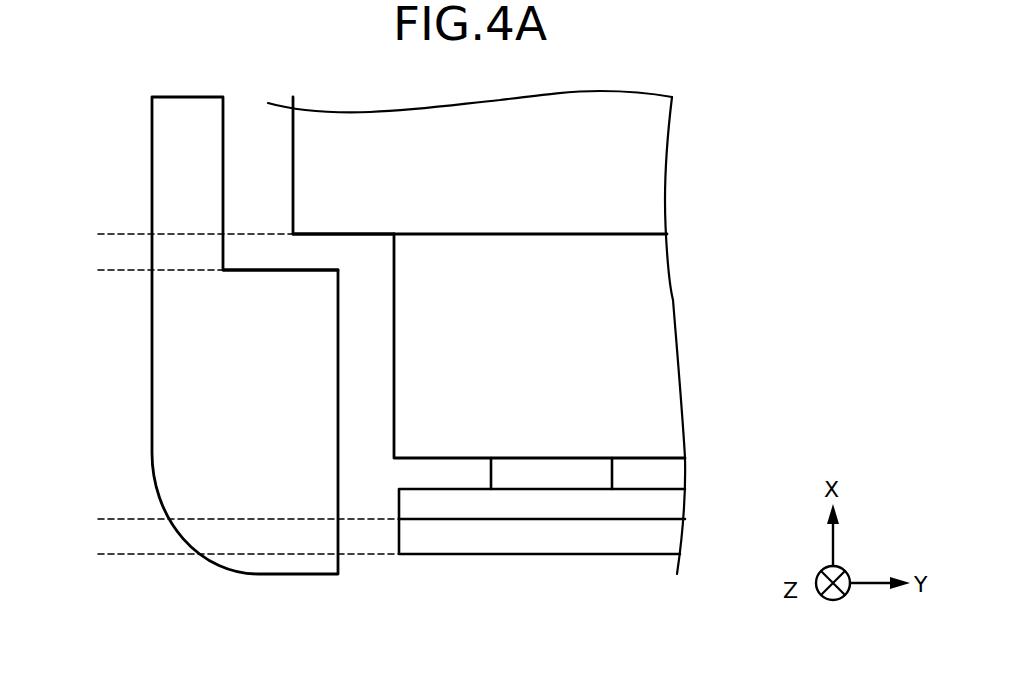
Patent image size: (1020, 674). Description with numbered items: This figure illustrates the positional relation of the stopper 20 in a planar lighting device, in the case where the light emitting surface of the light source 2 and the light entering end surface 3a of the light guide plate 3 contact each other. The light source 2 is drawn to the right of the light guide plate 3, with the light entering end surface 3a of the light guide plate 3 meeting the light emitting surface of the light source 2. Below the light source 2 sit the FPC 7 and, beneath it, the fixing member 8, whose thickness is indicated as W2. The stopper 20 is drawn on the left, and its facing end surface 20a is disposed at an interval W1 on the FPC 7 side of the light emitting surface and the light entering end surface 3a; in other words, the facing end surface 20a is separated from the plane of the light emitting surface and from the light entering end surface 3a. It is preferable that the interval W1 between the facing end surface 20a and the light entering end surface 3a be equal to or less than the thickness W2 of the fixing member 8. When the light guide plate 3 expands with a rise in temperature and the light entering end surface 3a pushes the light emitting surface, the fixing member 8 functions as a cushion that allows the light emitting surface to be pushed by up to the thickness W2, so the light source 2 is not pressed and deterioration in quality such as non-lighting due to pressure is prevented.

The light source 2 is at (643, 330).
The light guide plate 3 is at (308, 133).
The light entering end surface 3a is at (130, 233).
The stopper 20 is at (198, 393).
The facing end surface 20a is at (130, 271).
The FPC 7 is at (645, 497).
The fixing member 8 is at (645, 535).
The interval W1 is at (110, 234).
The thickness W2 is at (114, 519).